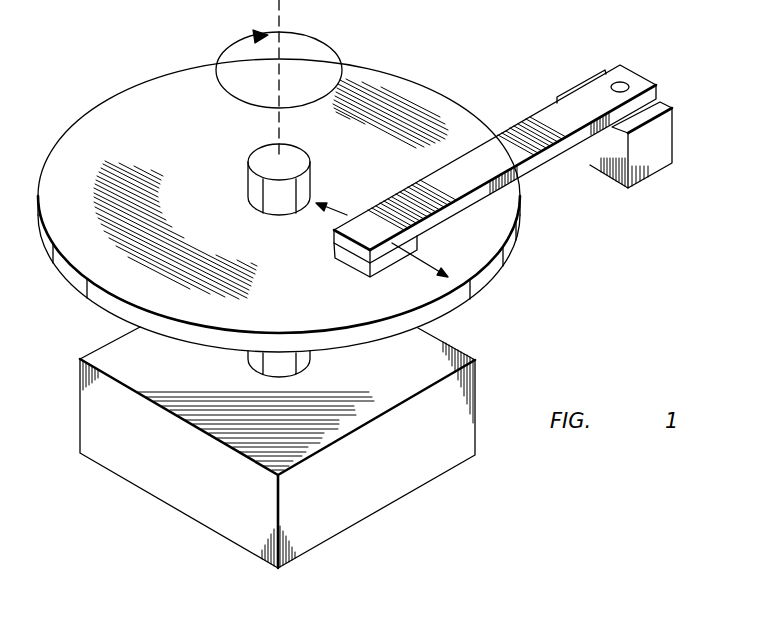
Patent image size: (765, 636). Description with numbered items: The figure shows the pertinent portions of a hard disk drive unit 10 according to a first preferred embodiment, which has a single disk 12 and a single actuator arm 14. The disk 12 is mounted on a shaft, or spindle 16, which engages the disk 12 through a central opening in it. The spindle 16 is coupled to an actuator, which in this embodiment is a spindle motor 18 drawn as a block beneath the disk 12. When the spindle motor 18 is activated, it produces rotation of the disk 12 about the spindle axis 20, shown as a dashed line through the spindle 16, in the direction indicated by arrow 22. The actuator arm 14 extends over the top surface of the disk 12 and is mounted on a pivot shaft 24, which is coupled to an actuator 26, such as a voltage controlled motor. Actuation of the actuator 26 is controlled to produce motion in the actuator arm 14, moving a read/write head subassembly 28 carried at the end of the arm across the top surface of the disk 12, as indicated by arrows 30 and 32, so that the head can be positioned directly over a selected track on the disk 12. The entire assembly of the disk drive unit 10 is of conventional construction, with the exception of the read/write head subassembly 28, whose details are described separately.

The hard disk drive unit 10 is at (120, 49).
The disk 12 is at (93, 118).
The actuator arm 14 is at (547, 117).
The spindle 16 is at (252, 187).
The spindle motor 18 is at (82, 411).
The spindle axis 20 is at (278, 9).
The arrow 22 is at (318, 42).
The pivot shaft 24 is at (622, 83).
The actuator 26 is at (667, 143).
The read/write head subassembly 28 is at (352, 257).
The arrow 30 is at (347, 215).
The arrow 32 is at (420, 265).